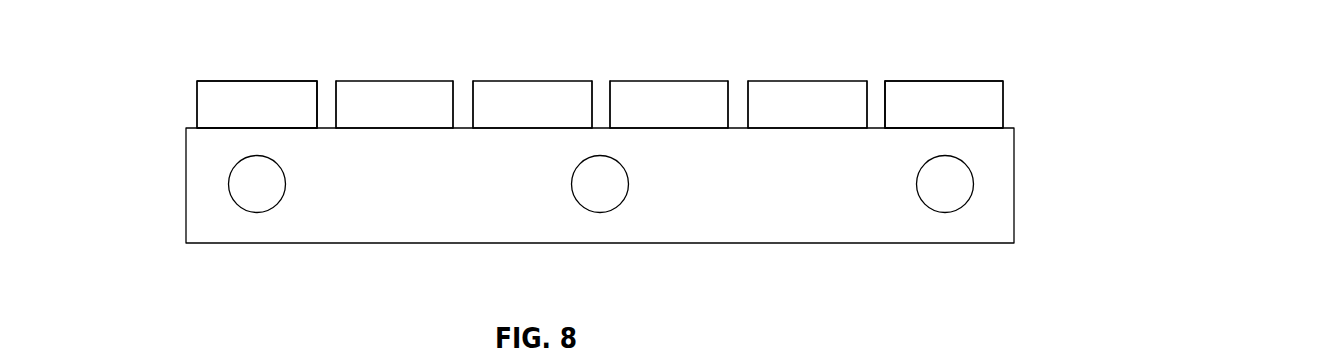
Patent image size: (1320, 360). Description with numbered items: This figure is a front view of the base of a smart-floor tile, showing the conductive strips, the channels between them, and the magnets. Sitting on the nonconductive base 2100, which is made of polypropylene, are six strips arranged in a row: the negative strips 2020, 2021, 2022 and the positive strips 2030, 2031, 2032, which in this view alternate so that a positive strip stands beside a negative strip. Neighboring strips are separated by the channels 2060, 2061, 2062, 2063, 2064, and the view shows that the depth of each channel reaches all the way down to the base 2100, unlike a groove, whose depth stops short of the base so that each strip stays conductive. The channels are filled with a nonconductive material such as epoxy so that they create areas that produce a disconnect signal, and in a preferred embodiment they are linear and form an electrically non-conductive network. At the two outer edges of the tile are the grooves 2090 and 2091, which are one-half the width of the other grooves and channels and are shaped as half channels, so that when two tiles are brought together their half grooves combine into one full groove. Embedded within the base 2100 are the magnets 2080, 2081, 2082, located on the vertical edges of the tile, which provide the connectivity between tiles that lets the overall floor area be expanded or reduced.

The negative strip 2020 is at (945, 80).
The negative strip 2021 is at (687, 62).
The negative strip 2022 is at (453, 92).
The positive strip 2030 is at (817, 62).
The positive strip 2031 is at (542, 62).
The positive strip 2032 is at (317, 90).
The channel 2060 is at (875, 112).
The channel 2061 is at (738, 103).
The channel 2062 is at (598, 103).
The channel 2063 is at (463, 112).
The channel 2064 is at (327, 112).
The magnet 2080 is at (938, 213).
The magnet 2081 is at (603, 213).
The magnet 2082 is at (227, 183).
The outer-edge groove 2090 is at (1012, 108).
The outer-edge groove 2091 is at (187, 102).
The nonconductive base 2100 is at (995, 222).